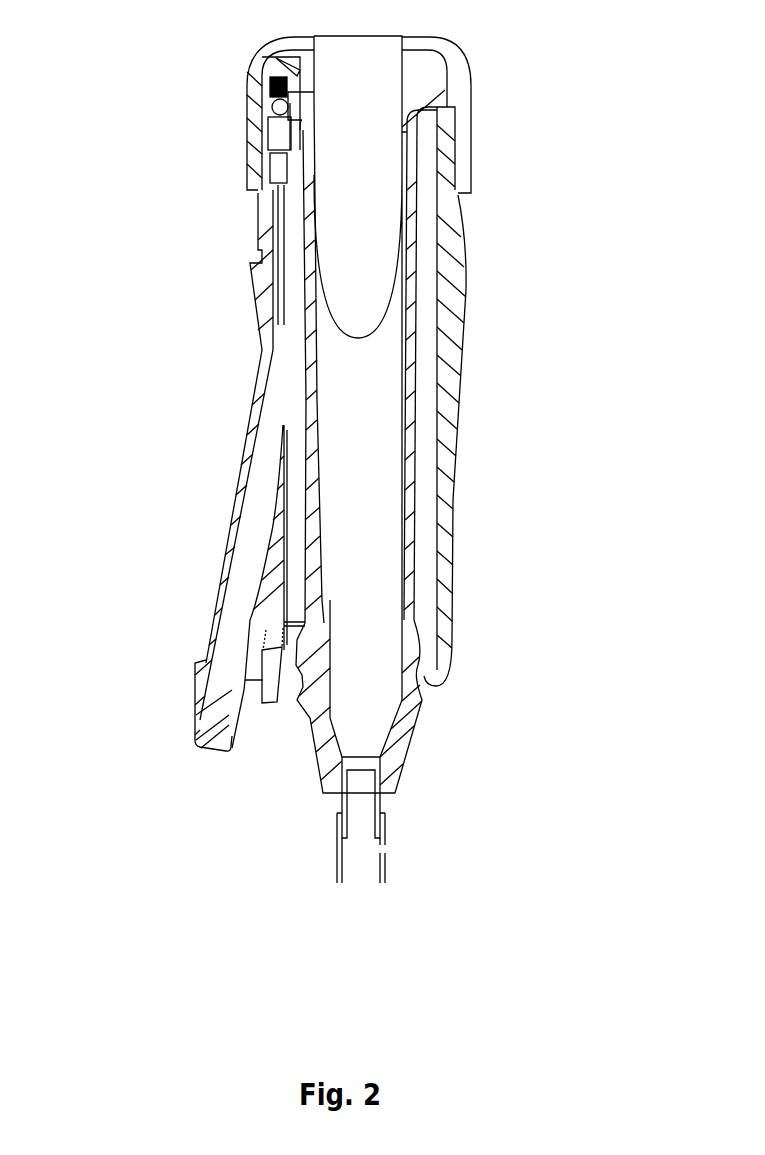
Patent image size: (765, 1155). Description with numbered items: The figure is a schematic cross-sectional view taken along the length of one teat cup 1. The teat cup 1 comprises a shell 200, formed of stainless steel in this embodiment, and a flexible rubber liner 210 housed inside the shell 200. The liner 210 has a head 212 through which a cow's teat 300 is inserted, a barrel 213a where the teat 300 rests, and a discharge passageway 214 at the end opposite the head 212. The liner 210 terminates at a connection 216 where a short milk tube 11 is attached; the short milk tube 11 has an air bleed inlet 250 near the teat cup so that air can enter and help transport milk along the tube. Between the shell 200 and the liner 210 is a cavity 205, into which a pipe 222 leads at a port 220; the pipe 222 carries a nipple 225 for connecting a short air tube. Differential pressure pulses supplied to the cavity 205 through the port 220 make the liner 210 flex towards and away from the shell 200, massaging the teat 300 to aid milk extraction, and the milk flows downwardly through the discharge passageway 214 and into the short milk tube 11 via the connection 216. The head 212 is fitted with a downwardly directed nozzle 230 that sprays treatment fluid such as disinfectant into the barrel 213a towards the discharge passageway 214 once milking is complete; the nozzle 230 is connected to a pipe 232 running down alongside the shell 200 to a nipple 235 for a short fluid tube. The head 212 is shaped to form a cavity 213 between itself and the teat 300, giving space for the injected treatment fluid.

The teat cup 1 is at (200, 42).
The short milk tube 11 is at (337, 877).
The shell 200 is at (455, 307).
The cavity 205 is at (424, 353).
The liner 210 is at (405, 392).
The head 212 is at (448, 53).
The cavity 213 is at (423, 77).
The barrel 213a is at (400, 253).
The discharge passageway 214 is at (418, 660).
The connection 216 is at (380, 796).
The port 220 is at (273, 407).
The pipe 222 is at (262, 491).
The nipple 225 is at (193, 718).
The nozzle 230 is at (268, 80).
The pipe 232 is at (268, 228).
The nipple 235 is at (272, 707).
The air bleed inlet 250 is at (385, 856).
The teat 300 is at (375, 228).